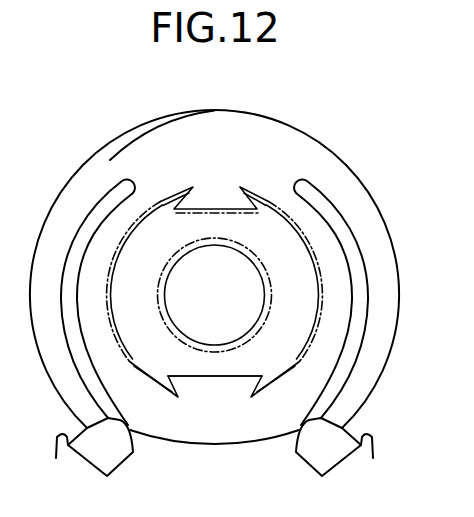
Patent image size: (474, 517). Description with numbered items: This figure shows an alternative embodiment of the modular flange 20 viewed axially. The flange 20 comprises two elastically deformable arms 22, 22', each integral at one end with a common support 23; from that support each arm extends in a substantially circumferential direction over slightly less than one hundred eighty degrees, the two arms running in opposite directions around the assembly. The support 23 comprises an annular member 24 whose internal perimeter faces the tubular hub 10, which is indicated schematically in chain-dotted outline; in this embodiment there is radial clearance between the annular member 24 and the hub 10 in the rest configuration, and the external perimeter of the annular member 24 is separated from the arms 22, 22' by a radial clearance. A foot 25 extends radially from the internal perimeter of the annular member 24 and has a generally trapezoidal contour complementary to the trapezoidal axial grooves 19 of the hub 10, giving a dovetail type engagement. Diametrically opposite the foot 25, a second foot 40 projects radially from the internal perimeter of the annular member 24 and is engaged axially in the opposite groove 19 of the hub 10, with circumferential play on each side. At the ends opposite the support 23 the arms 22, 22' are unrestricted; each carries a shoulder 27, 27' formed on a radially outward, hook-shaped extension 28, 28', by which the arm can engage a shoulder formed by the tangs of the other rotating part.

The tubular hub 10 is at (280, 209).
The axial grooves 19 is at (191, 212).
The modular flange 20 is at (351, 150).
The elastically deformable arm 22 is at (82, 293).
The elastically deformable arm 22' is at (349, 289).
The common support 23 is at (115, 137).
The annular member 24 is at (238, 446).
The foot 25 is at (234, 377).
The shoulder 27 is at (58, 460).
The shoulder 27' is at (377, 457).
The extension 28 is at (100, 459).
The extension 28' is at (328, 459).
The second foot 40 is at (220, 204).